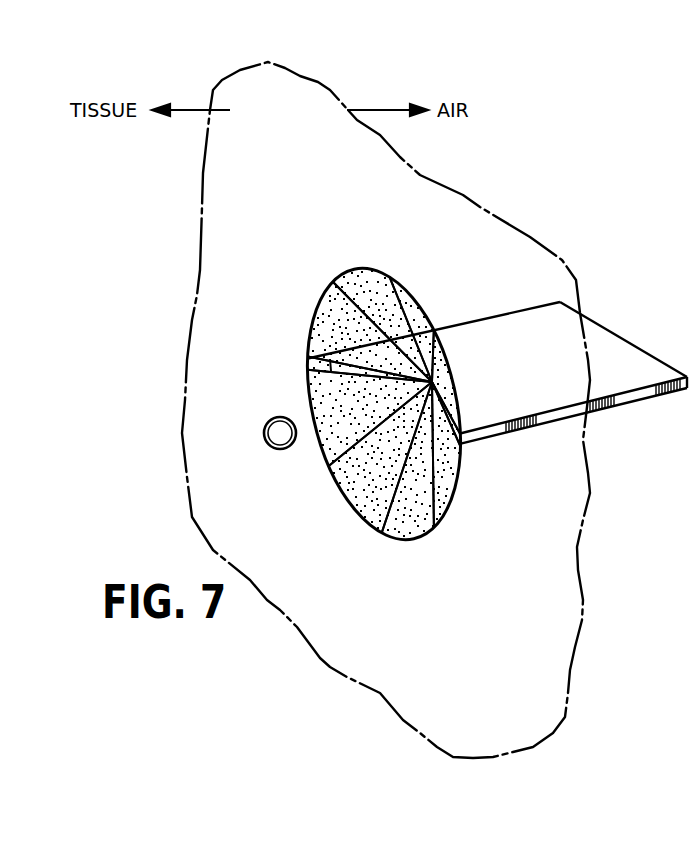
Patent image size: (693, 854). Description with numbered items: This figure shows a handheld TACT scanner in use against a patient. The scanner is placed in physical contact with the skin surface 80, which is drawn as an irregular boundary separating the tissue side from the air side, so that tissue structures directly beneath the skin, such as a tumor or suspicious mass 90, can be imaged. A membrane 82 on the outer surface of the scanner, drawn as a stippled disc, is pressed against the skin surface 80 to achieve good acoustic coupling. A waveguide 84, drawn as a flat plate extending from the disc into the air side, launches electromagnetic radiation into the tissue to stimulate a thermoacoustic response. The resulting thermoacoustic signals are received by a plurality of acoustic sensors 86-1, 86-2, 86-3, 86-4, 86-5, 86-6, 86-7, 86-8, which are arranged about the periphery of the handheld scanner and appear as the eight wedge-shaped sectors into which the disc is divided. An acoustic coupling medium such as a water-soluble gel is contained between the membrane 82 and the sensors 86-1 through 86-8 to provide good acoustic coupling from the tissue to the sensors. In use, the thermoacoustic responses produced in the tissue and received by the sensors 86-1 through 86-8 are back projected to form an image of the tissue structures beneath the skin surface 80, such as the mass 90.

The skin surface 80 is at (545, 246).
The membrane 82 is at (313, 331).
The waveguide 84 is at (643, 354).
The acoustic sensor 86-1 is at (423, 300).
The acoustic sensor 86-2 is at (448, 370).
The acoustic sensor 86-3 is at (458, 502).
The acoustic sensor 86-4 is at (400, 542).
The acoustic sensor 86-5 is at (357, 507).
The acoustic sensor 86-6 is at (310, 388).
The acoustic sensor 86-7 is at (319, 291).
The acoustic sensor 86-8 is at (366, 259).
The suspicious mass 90 is at (264, 440).